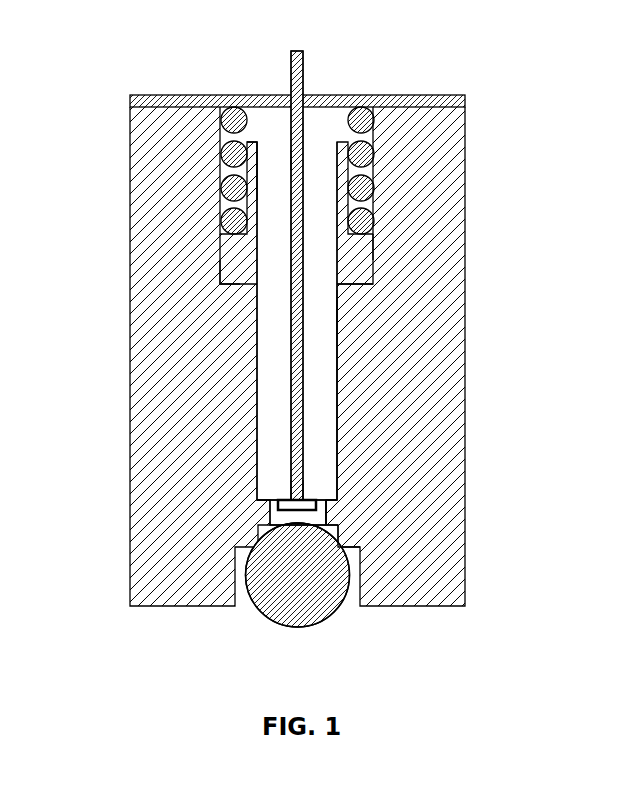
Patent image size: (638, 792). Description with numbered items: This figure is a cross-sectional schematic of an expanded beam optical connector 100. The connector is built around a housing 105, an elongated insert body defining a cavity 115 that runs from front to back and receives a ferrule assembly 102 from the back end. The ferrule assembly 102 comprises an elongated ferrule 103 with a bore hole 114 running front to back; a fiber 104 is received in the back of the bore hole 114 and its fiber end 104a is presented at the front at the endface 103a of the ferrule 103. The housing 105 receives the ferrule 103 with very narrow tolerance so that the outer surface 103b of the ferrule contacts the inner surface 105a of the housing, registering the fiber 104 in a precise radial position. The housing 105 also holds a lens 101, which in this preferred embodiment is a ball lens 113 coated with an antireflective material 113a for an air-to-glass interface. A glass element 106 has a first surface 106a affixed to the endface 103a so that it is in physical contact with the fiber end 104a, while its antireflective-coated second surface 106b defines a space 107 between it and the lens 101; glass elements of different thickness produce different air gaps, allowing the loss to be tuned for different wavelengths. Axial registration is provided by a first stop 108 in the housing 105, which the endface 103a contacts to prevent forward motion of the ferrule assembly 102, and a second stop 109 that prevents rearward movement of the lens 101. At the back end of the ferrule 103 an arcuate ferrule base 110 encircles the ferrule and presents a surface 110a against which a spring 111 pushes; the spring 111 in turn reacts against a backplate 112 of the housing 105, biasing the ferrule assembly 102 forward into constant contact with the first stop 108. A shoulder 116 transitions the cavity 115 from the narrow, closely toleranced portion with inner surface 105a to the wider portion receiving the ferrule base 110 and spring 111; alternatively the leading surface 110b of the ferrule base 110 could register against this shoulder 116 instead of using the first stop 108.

The optical connector 100 is at (291, 310).
The lens 101 is at (312, 595).
The ferrule assembly 102 is at (313, 152).
The ferrule 103 is at (377, 407).
The endface 103a is at (324, 500).
The outer surface 103b is at (338, 324).
The fiber 104 is at (281, 271).
The fiber end 104a is at (293, 497).
The housing 105 is at (330, 356).
The inner surface 105a is at (256, 350).
The glass element 106 is at (273, 476).
The first surface 106a is at (305, 500).
The second surface 106b is at (224, 496).
The space 107 is at (371, 568).
The first stop 108 is at (328, 512).
The second stop 109 is at (345, 540).
The ferrule base 110 is at (331, 279).
The surface 110a is at (372, 242).
The leading surface 110b is at (358, 285).
The spring 111 is at (366, 190).
The backplate 112 is at (405, 96).
The ball lens 113 is at (310, 598).
The antireflective material 113a is at (270, 527).
The bore hole 114 is at (288, 155).
The cavity 115 is at (257, 123).
The shoulder 116 is at (240, 283).